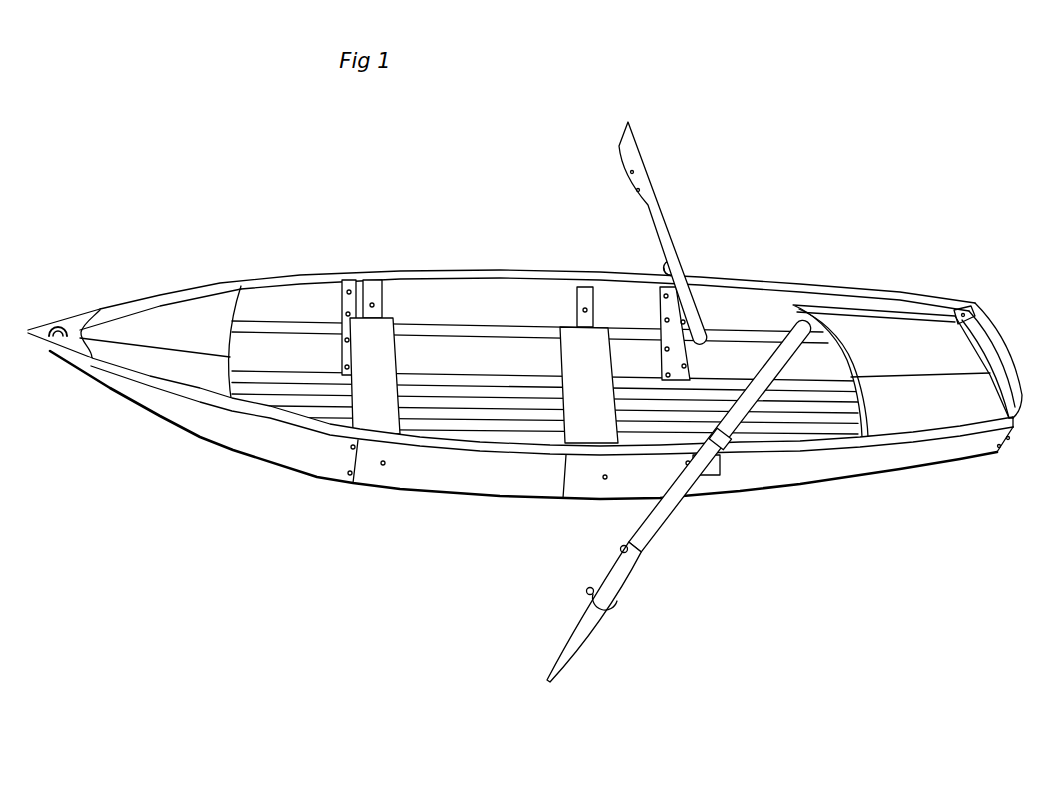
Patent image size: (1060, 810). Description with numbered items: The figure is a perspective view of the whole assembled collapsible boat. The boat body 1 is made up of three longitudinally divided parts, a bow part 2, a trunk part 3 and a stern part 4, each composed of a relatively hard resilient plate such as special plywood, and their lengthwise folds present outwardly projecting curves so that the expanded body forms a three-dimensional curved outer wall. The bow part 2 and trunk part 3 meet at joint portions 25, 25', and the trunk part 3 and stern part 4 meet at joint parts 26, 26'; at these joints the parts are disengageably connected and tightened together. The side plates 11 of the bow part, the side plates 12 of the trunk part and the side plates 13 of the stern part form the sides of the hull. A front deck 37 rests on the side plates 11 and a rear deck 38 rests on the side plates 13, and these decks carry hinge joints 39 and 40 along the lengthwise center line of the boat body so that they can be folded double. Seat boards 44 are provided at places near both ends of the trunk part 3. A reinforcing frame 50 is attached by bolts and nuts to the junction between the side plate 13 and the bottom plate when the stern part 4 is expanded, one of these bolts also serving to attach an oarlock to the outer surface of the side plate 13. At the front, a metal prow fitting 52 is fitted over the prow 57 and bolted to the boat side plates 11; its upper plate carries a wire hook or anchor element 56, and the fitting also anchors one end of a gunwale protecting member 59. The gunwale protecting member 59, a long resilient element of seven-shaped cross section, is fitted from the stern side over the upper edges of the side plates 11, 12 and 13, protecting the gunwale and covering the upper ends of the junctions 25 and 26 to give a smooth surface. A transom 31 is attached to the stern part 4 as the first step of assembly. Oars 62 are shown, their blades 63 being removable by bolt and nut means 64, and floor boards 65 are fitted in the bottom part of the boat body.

The boat body 1 is at (817, 279).
The bow part 2 is at (245, 274).
The trunk part 3 is at (542, 268).
The stern part 4 is at (859, 282).
The side plates of the bow part 11 is at (300, 297).
The side plates of the trunk part 12 is at (494, 298).
The side plates of the stern part 13 is at (765, 298).
The joint portion 25 is at (340, 492).
The joint portion 25' is at (523, 440).
The joint part 26 is at (704, 249).
The joint part 26' is at (690, 245).
The transom 31 is at (1015, 399).
The front deck 37 is at (169, 322).
The rear deck 38 is at (903, 335).
The hinge joint of the front deck 39 is at (125, 347).
The hinge joint of the rear deck 40 is at (930, 376).
The seat boards 44 is at (372, 333).
The reinforcing frame 50 is at (688, 343).
The metal prow fitting 52 is at (76, 314).
The wire hook or anchor element 56 is at (56, 343).
The prow 57 is at (62, 369).
The gunwale protecting member 59 is at (603, 298).
The oars 62 is at (662, 211).
The blades 63 is at (570, 645).
The bolt and nut means 64 is at (619, 568).
The floor boards 65 is at (430, 414).